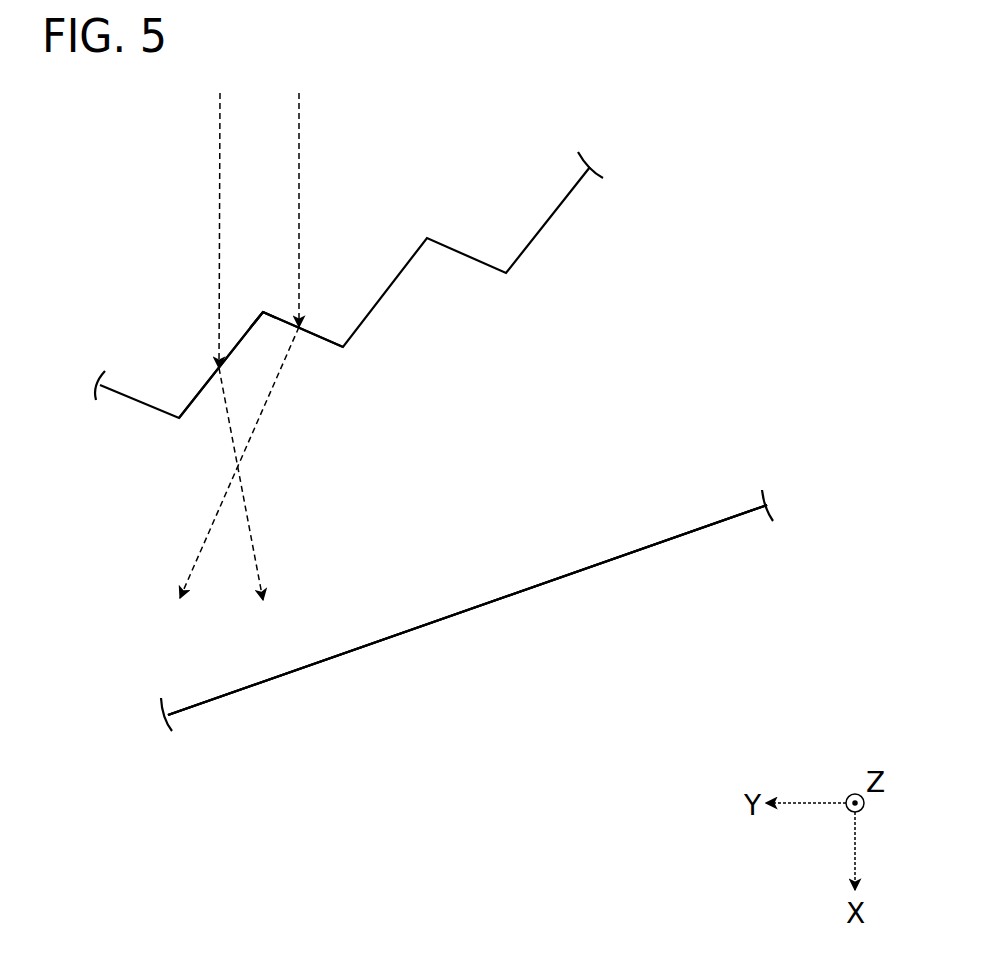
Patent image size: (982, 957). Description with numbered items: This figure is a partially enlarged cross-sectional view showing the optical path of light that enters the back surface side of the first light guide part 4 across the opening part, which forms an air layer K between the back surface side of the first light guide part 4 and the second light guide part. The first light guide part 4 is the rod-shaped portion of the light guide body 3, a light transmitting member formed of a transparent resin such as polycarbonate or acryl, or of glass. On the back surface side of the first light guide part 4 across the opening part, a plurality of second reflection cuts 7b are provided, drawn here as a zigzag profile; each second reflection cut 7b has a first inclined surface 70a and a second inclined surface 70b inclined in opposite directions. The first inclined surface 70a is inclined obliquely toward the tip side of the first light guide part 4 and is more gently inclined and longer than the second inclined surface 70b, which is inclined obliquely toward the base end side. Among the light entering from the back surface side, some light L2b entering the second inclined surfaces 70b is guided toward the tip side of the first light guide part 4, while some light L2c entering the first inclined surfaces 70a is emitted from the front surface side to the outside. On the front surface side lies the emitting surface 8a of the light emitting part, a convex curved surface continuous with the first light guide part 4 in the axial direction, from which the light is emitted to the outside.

The air layer K is at (355, 218).
The second reflection cut 7b is at (258, 292).
The first inclined surface 70a is at (197, 397).
The second inclined surface 70b is at (320, 338).
The light L2b is at (203, 543).
The light L2c is at (255, 533).
The first light guide part 4 is at (618, 513).
The light guide body 3 is at (530, 633).
The emitting surface 8a is at (340, 655).